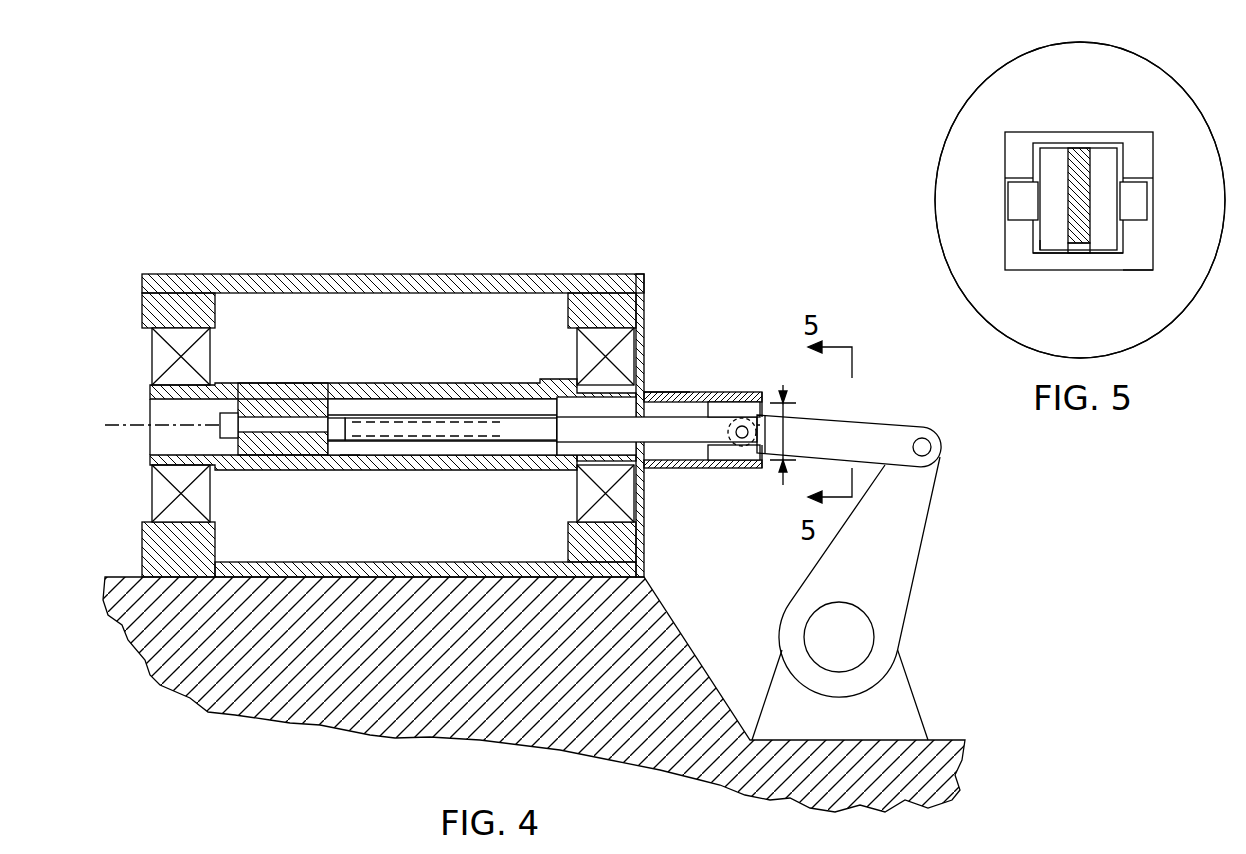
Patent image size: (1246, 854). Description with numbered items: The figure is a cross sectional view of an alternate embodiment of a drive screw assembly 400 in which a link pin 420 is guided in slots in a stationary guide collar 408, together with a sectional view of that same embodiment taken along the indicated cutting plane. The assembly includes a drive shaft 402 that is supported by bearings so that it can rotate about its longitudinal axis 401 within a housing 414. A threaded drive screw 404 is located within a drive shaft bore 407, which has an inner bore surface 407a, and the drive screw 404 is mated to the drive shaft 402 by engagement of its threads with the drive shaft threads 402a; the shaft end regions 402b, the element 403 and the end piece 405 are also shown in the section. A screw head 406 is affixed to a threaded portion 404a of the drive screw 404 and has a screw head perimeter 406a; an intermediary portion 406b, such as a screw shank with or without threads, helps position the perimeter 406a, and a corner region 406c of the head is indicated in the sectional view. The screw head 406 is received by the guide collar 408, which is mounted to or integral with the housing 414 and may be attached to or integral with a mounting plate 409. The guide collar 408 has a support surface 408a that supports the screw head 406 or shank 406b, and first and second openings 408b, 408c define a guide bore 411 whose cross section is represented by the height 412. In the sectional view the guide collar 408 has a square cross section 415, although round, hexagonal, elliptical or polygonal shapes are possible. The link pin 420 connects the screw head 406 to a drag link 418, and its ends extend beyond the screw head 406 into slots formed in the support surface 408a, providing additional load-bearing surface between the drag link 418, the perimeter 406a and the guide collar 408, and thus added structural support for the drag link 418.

In FIG. 4, the drive screw assembly 400 is at (532, 694).
In FIG. 5, the drive screw assembly 400 is at (1046, 200).
In FIG. 4, the longitudinal axis 401 is at (110, 422).
In FIG. 4, the drive shaft 402 is at (393, 397).
In FIG. 4, the drive shaft threads 402a is at (262, 455).
In FIG. 4, the shaft second end 402b is at (630, 468).
In FIG. 4, the rod 403 is at (262, 418).
In FIG. 4, the drive screw 404 is at (412, 413).
In FIG. 4, the threaded portion of the drive screw 404a is at (348, 418).
In FIG. 4, the end cap 405 is at (222, 425).
In FIG. 4, the screw head 406 is at (716, 460).
In FIG. 5, the screw head 406 is at (1045, 232).
In FIG. 4, the screw head perimeter 406a is at (503, 400).
In FIG. 4, the intermediary portion (screw shank) 406b is at (503, 456).
In FIG. 5, the tube corner 406c is at (997, 277).
In FIG. 4, the drive shaft bore 407 is at (568, 456).
In FIG. 4, the inner bore surface 407a is at (348, 456).
In FIG. 4, the guide collar 408 is at (705, 391).
In FIG. 5, the guide collar 408 is at (1153, 170).
In FIG. 4, the support surface 408a is at (663, 462).
In FIG. 5, the support surface 408a is at (1085, 145).
In FIG. 4, the first opening 408b is at (736, 468).
In FIG. 4, the second opening 408c is at (672, 392).
In FIG. 4, the mounting plate 409 is at (645, 322).
In FIG. 5, the mounting plate 409 is at (1148, 75).
In FIG. 4, the guide bore 411 is at (697, 400).
In FIG. 5, the guide bore 411 is at (1070, 260).
In FIG. 4, the height 412 is at (786, 433).
In FIG. 4, the housing 414 is at (345, 276).
In FIG. 5, the cross section 415 is at (1135, 260).
In FIG. 4, the drag link 418 is at (868, 420).
In FIG. 5, the drag link 418 is at (1065, 165).
In FIG. 4, the link pin 420 is at (752, 406).
In FIG. 5, the link pin 420 is at (1096, 163).